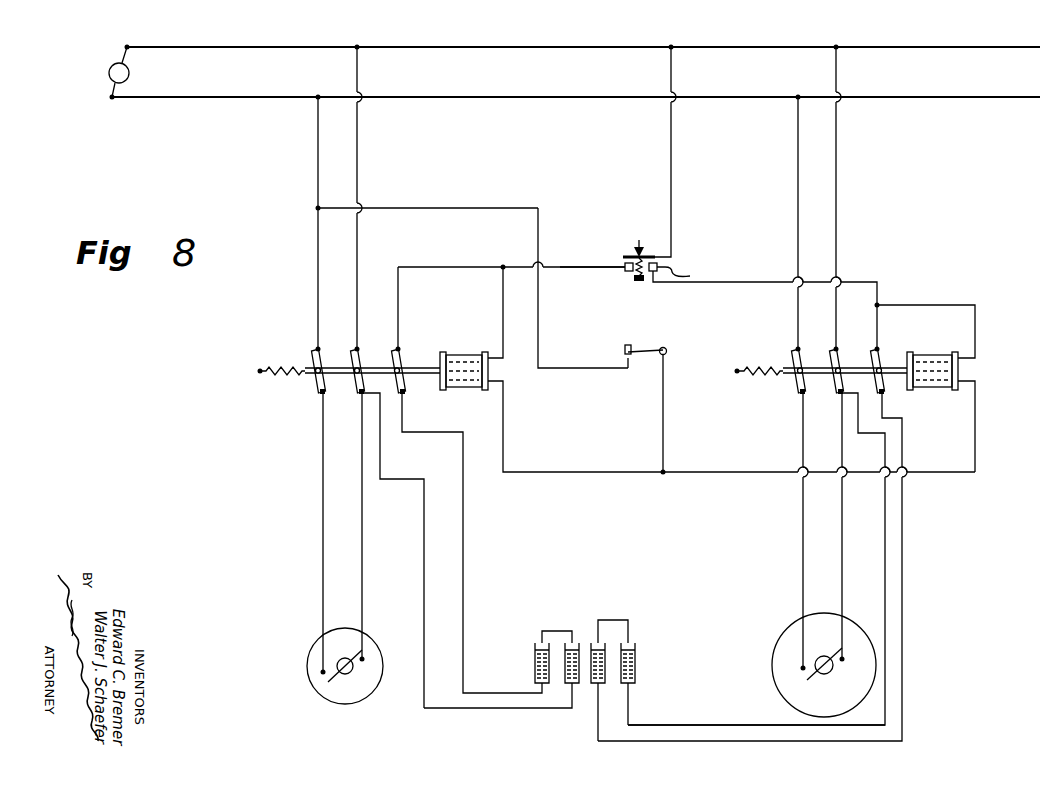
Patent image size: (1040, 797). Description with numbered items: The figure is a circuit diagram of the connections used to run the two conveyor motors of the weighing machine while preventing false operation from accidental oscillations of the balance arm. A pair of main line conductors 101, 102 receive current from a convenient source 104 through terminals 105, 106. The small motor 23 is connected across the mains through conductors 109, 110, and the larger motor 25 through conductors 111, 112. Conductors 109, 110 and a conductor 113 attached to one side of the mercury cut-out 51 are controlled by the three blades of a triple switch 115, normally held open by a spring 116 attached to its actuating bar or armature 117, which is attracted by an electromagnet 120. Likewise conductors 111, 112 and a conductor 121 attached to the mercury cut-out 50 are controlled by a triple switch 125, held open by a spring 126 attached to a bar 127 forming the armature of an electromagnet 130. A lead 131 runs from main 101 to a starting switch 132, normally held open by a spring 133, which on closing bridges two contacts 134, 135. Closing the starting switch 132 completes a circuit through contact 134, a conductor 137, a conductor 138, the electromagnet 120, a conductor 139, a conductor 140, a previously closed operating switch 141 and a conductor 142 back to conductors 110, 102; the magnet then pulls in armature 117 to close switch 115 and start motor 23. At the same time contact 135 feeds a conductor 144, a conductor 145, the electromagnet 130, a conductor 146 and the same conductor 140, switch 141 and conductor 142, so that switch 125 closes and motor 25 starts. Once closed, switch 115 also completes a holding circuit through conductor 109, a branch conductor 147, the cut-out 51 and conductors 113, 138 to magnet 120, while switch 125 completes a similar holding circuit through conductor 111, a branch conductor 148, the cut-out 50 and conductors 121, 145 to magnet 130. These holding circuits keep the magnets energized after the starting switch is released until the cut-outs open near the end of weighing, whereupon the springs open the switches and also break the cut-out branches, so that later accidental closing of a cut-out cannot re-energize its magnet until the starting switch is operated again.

The main line conductor 101 is at (476, 47).
The main line conductor 102 is at (496, 95).
The current source 104 is at (106, 74).
The terminal 105 is at (127, 47).
The terminal 106 is at (112, 97).
The conductor 109 is at (357, 168).
The conductor 110 is at (318, 182).
The conductor 111 is at (836, 150).
The conductor 112 is at (798, 162).
The conductor 113 is at (445, 267).
The triple switch 115 is at (322, 345).
The spring 116 is at (283, 373).
The armature 117 is at (340, 385).
The electromagnet 120 is at (470, 392).
The conductor 121 is at (903, 566).
The triple switch 125 is at (813, 354).
The spring 126 is at (760, 373).
The bar 127 is at (821, 398).
The electromagnet 130 is at (935, 388).
The lead 131 is at (671, 180).
The starting switch 132 is at (640, 244).
The spring 133 is at (653, 272).
The contact 134 is at (628, 272).
The contact 135 is at (690, 276).
The conductor 137 is at (603, 267).
The conductor 138 is at (503, 311).
The conductor 139 is at (503, 440).
The conductor 140 is at (663, 425).
The operating switch 141 is at (663, 346).
The conductor 142 is at (538, 365).
The conductor 144 is at (720, 282).
The conductor 145 is at (960, 303).
The conductor 146 is at (975, 442).
The branch conductor 147 is at (424, 570).
The branch conductor 148 is at (716, 725).
The electric motor 23 is at (316, 646).
The electric motor 25 is at (782, 642).
The mercury cut-out 50 is at (615, 672).
The mercury cut-out 51 is at (555, 672).